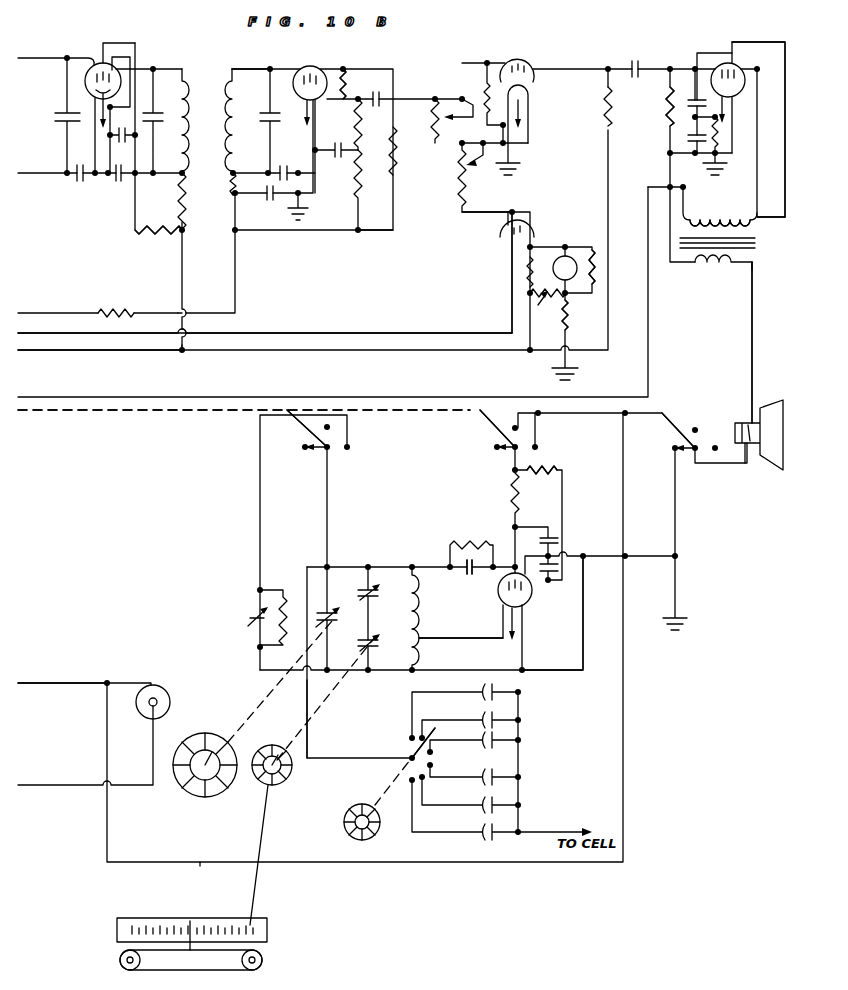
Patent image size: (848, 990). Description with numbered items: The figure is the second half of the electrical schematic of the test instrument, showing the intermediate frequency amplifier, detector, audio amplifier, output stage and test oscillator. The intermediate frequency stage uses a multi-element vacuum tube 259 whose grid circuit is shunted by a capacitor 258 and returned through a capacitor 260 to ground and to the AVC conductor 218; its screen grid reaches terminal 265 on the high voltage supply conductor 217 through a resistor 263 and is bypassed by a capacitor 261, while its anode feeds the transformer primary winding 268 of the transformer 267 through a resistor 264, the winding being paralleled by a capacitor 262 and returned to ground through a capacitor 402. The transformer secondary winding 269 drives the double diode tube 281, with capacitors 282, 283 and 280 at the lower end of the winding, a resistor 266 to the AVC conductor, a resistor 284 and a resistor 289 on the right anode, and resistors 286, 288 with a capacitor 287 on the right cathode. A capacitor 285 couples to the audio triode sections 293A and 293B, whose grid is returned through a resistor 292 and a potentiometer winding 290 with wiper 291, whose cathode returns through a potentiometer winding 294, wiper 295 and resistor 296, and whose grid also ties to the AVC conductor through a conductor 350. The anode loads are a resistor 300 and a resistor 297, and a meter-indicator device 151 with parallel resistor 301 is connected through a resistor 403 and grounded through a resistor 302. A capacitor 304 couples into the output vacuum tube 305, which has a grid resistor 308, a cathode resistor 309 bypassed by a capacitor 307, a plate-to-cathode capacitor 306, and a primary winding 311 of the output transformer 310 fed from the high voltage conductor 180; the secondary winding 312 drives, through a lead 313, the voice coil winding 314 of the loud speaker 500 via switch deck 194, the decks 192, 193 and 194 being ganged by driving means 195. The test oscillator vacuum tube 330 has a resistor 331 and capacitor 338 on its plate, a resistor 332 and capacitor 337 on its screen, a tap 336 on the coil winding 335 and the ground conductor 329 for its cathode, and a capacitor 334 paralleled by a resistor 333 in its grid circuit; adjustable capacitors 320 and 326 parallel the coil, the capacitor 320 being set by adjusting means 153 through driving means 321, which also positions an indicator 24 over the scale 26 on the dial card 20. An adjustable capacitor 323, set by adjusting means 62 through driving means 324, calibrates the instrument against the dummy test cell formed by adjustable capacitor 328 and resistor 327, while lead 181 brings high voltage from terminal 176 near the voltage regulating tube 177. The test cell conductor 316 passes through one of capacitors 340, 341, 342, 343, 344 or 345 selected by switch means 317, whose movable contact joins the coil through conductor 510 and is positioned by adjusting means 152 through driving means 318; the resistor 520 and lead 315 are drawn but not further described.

The multi-element vacuum tube 259 is at (88, 58).
The capacitor 258 is at (62, 115).
The capacitor 402 is at (116, 138).
The capacitor 260 is at (80, 182).
The capacitor 261 is at (119, 182).
The transformer primary winding 268 is at (183, 70).
The transformer 267 is at (216, 108).
The transformer secondary winding 269 is at (234, 70).
The capacitor 280 is at (270, 108).
The double diode tube 281 is at (311, 66).
The resistor 284 is at (344, 80).
The capacitor 285 is at (374, 88).
The resistor 286 is at (367, 127).
The capacitor 287 is at (337, 160).
The resistor 288 is at (364, 205).
The resistor 289 is at (397, 165).
The potentiometer winding 290 is at (436, 99).
The wiper 291 is at (450, 121).
The resistor 292 is at (488, 72).
The triode section 293A is at (530, 62).
The potentiometer winding 294 is at (458, 156).
The wiper 295 is at (478, 168).
The resistor 296 is at (463, 213).
The triode section 293B is at (501, 238).
The meter-indicator device 151 is at (586, 233).
The resistor 300 is at (528, 275).
The resistor 301 is at (598, 272).
The resistor 403 is at (545, 297).
The resistor 302 is at (557, 325).
The conductor 350 is at (335, 331).
The high voltage supply conductor 217 is at (408, 350).
The AVC conductor 218 is at (70, 312).
The resistor 266 is at (142, 296).
The terminal 265 is at (182, 355).
The high voltage conductor 180 is at (240, 397).
The driving means 195 is at (190, 415).
The capacitor 262 is at (163, 201).
The resistor 520 is at (213, 185).
The resistor 263 is at (160, 234).
The resistor 264 is at (186, 212).
The capacitor 282 is at (275, 200).
The capacitor 283 is at (280, 183).
The capacitor 304 is at (623, 65).
The capacitor 306 is at (690, 98).
The vacuum tube 305 is at (735, 87).
The resistor 297 is at (612, 118).
The resistor 308 is at (667, 104).
The capacitor 307 is at (694, 142).
The resistor 309 is at (718, 142).
The primary winding 311 is at (760, 218).
The output transformer 310 is at (735, 240).
The secondary winding 312 is at (716, 268).
The lead 313 is at (756, 352).
The loud speaker 500 is at (770, 407).
The switch deck 194 is at (692, 421).
The voice coil winding 314 is at (752, 447).
The ground lead 315 is at (678, 556).
The switch deck 192 is at (325, 511).
The switch deck 193 is at (527, 440).
The resistor 332 is at (510, 478).
The resistor 331 is at (556, 468).
The resistor 333 is at (485, 514).
The capacitor 334 is at (470, 576).
The capacitor 337 is at (560, 536).
The capacitor 338 is at (562, 585).
The multi-element vacuum tube 330 is at (524, 612).
The ground conductor 329 is at (585, 642).
The adjustable capacitor 326 is at (374, 586).
The resistor 327 is at (286, 605).
The adjustable capacitor 328 is at (250, 615).
The adjustable capacitor 323 is at (332, 612).
The coil winding 335 is at (416, 576).
The tap 336 is at (420, 637).
The adjustable capacitor 320 is at (378, 650).
The driving means 321 is at (315, 700).
The driving means 324 is at (245, 722).
The conductor 510 is at (303, 730).
The adjusting means 153 is at (285, 778).
The adjusting means 62 is at (213, 733).
The adjusting means 152 is at (345, 825).
The driving means 318 is at (392, 780).
The switch means 317 is at (404, 743).
The capacitor 340 is at (495, 690).
The capacitor 341 is at (495, 720).
The capacitor 342 is at (495, 740).
The capacitor 343 is at (495, 777).
The capacitor 344 is at (495, 805).
The capacitor 345 is at (494, 836).
The conductor 316 is at (546, 830).
The terminal 176 is at (130, 665).
The voltage regulating tube 177 is at (172, 696).
The indicator 24 is at (190, 925).
The lead 181 is at (200, 863).
The scale 26 is at (242, 918).
The dial card 20 is at (270, 932).